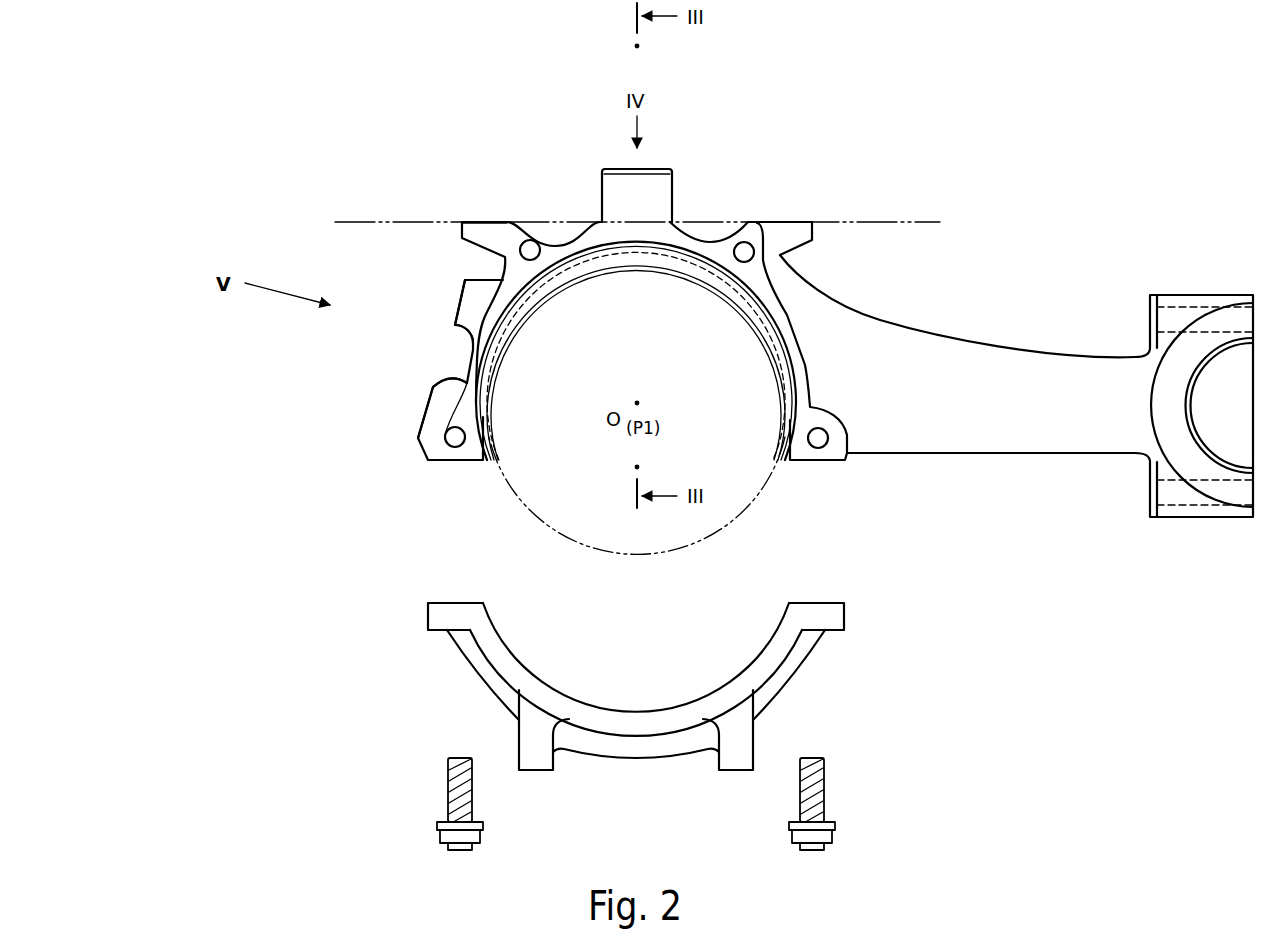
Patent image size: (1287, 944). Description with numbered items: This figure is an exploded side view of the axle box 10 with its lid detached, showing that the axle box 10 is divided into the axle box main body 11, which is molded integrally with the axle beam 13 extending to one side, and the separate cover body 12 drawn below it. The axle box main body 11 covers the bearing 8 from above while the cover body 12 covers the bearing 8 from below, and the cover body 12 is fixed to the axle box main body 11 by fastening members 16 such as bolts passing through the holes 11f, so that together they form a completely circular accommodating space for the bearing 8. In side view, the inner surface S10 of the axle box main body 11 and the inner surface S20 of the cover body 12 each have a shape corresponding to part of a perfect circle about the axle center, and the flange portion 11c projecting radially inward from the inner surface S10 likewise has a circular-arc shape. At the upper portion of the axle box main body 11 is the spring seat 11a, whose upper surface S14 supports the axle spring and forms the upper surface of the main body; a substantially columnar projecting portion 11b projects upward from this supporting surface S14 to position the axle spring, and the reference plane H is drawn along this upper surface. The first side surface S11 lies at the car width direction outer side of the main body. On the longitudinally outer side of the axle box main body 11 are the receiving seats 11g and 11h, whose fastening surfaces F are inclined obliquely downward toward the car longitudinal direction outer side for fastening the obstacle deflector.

The bearing 8 is at (830, 530).
The axle box 10 is at (997, 214).
The axle box main body 11 is at (437, 467).
The spring seat 11a is at (787, 240).
The projecting portion 11b is at (668, 172).
The flange portion 11c is at (636, 353).
The bolt hole 11f is at (525, 250).
The receiving seat 11g is at (457, 306).
The receiving seat 11h is at (432, 402).
The cover body 12 is at (424, 614).
The axle beam 13 is at (1060, 360).
The fastening member 16 is at (437, 826).
The fastening surface F is at (460, 296).
The reference plane H is at (845, 222).
The inner surface of the axle box main body S10 is at (503, 420).
The first side surface S11 is at (480, 462).
The upper surface of the spring seat S14 is at (503, 222).
The inner surface of the cover body S20 is at (533, 675).